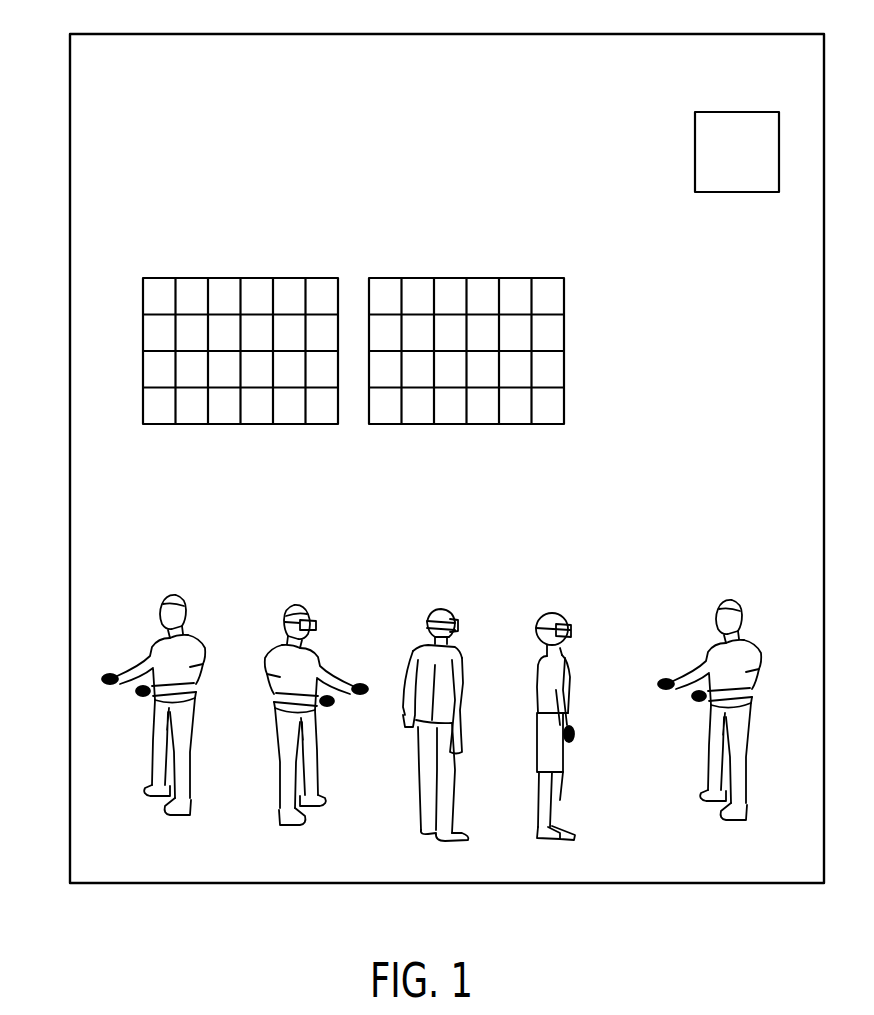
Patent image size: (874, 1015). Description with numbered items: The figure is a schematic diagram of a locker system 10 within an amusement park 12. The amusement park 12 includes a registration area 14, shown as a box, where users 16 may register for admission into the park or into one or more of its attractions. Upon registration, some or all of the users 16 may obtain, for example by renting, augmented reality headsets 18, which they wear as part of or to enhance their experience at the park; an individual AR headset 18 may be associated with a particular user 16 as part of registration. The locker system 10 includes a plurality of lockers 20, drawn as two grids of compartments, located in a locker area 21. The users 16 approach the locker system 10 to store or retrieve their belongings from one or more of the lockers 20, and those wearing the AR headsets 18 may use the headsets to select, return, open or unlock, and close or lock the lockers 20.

The locker system 10 is at (202, 159).
The amusement park 12 is at (56, 96).
The registration area 14 is at (750, 193).
The users 16 is at (684, 700).
The augmented reality headset 18 is at (576, 624).
The lockers 20 is at (330, 297).
The locker area 21 is at (363, 314).